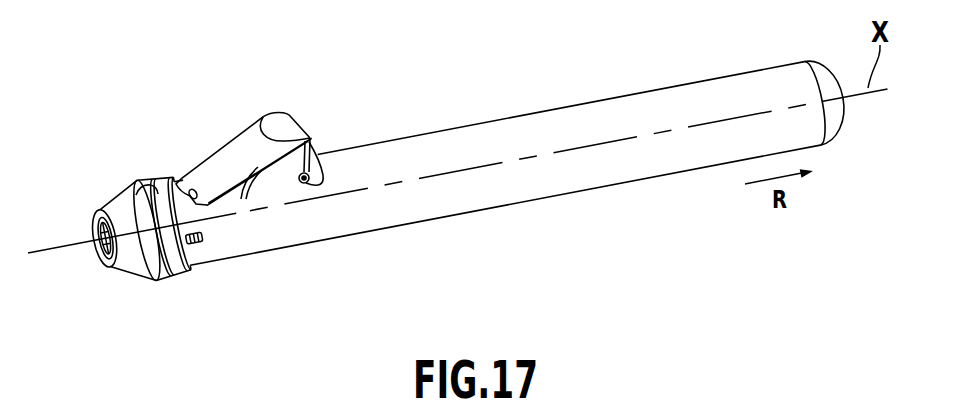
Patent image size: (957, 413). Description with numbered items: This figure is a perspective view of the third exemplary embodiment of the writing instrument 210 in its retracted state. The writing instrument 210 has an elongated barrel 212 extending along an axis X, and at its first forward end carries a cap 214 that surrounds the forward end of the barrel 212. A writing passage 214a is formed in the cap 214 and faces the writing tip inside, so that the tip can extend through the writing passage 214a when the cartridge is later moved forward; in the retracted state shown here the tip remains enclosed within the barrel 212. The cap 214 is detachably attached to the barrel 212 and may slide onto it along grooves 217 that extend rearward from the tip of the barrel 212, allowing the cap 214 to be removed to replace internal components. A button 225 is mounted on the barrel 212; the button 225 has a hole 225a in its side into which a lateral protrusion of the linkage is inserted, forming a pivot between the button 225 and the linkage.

The writing instrument 210 is at (620, 229).
The barrel 212 is at (553, 109).
The cap 214 is at (100, 214).
The writing passage 214a is at (97, 243).
The grooves 217 is at (196, 245).
The button 225 is at (210, 141).
The hole 225a is at (313, 147).